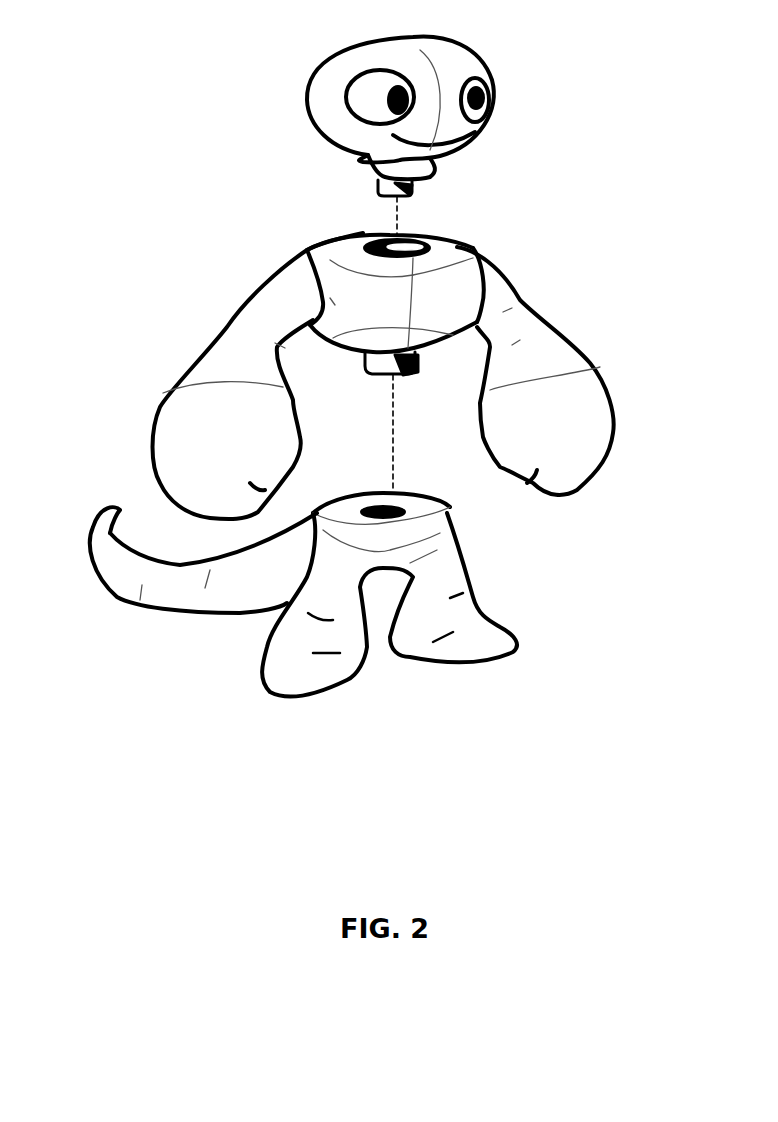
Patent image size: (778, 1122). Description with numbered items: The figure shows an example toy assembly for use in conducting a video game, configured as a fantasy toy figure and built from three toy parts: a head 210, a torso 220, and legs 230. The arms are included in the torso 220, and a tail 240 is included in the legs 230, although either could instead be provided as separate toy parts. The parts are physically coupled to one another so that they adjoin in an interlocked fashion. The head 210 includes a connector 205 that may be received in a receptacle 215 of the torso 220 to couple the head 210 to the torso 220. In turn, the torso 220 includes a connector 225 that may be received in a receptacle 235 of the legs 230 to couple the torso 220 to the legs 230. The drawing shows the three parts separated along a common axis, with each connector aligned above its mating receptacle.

The connector 205 is at (410, 192).
The head 210 is at (413, 37).
The receptacle 215 is at (450, 242).
The torso 220 is at (228, 327).
The connector 225 is at (412, 370).
The legs 230 is at (483, 595).
The receptacle 235 is at (383, 508).
The tail 240 is at (133, 605).